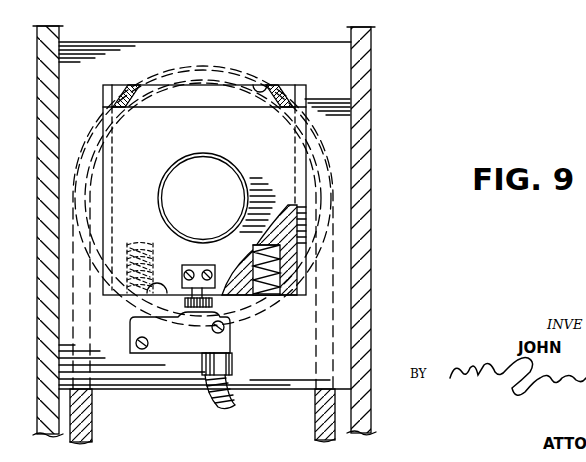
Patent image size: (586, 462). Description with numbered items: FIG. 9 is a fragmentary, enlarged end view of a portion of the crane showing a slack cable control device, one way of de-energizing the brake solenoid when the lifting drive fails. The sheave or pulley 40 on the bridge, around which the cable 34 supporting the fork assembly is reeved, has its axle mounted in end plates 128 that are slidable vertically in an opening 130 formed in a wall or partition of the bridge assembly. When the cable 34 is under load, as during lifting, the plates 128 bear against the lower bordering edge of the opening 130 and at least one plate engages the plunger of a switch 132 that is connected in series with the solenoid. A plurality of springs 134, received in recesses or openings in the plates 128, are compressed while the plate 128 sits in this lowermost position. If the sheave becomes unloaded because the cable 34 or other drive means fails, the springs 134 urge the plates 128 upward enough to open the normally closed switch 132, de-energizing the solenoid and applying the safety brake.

The cable 34 is at (92, 424).
The pulley 40 is at (233, 70).
The end plates 128 is at (215, 142).
The opening 130 is at (267, 88).
The switch 132 is at (217, 340).
The springs 134 is at (145, 233).